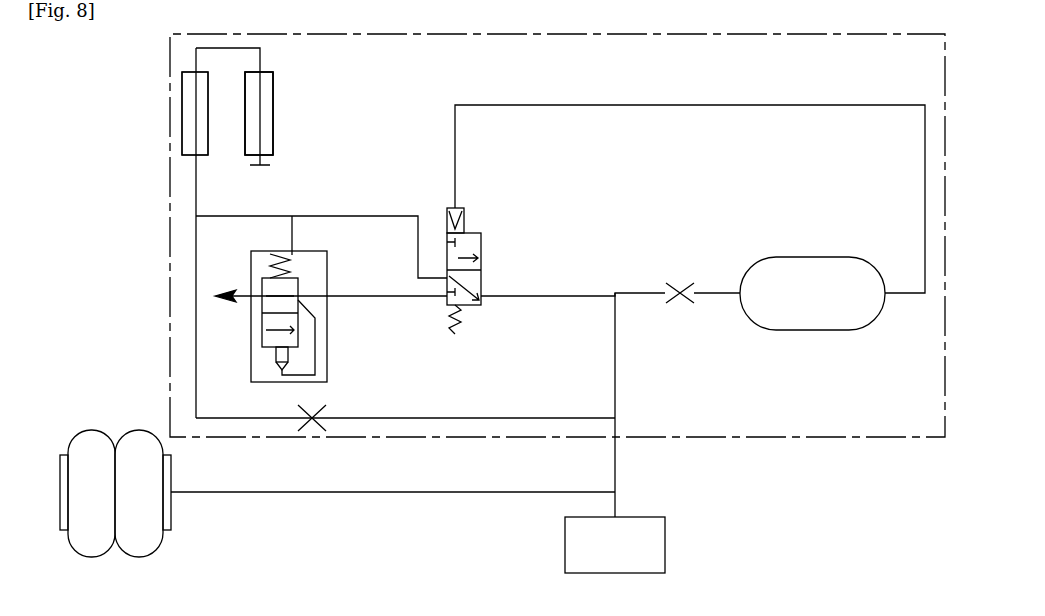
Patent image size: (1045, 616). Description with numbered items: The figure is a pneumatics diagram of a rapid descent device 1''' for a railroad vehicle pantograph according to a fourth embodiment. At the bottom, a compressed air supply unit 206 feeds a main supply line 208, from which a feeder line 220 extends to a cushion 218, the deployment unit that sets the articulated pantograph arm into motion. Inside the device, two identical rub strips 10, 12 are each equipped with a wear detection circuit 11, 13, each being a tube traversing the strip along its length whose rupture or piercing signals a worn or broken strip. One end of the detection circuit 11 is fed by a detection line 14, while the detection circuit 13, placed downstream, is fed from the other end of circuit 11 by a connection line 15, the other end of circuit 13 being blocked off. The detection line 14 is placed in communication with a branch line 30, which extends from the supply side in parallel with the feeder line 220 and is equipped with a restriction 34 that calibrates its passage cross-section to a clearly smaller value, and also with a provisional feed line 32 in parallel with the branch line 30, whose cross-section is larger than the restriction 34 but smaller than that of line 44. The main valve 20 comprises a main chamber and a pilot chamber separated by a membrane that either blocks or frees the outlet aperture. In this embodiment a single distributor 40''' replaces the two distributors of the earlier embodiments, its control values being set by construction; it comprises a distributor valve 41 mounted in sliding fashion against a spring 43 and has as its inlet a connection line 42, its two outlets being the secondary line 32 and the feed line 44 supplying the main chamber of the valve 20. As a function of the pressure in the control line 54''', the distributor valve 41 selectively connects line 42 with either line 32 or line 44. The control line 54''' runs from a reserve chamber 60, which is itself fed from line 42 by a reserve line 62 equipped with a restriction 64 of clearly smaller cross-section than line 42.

The rapid descent device 1''' is at (492, 235).
The rub strip 10 is at (182, 122).
The wear detection circuit 11 is at (185, 143).
The rub strip 12 is at (273, 88).
The wear detection circuit 13 is at (264, 132).
The detection line 14 is at (196, 175).
The connection line 15 is at (228, 50).
The main valve 20 is at (338, 352).
The branch line 30 is at (414, 420).
The provisional feed line 32 is at (362, 215).
The restriction 34 is at (305, 425).
The single distributor 40''' is at (522, 269).
The distributor valve 41 is at (483, 242).
The connection line 42 is at (545, 298).
The spring 43 is at (456, 336).
The feed line 44 is at (366, 298).
The control line 54''' is at (690, 199).
The reserve chamber 60 is at (812, 293).
The reserve line 62 is at (718, 297).
The restriction 64 is at (670, 288).
The supply unit 206 is at (615, 545).
The supply line 208 is at (617, 505).
The cushion 218 is at (160, 550).
The feeder line 220 is at (396, 495).